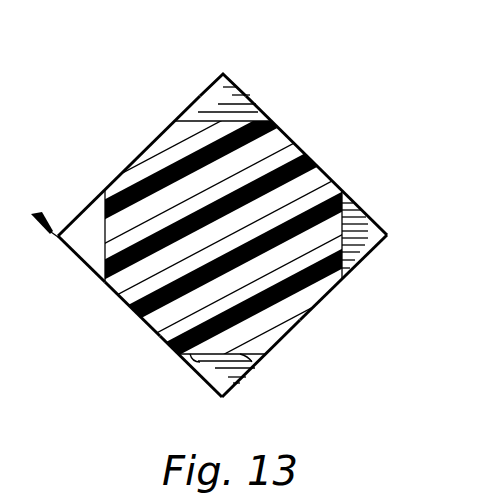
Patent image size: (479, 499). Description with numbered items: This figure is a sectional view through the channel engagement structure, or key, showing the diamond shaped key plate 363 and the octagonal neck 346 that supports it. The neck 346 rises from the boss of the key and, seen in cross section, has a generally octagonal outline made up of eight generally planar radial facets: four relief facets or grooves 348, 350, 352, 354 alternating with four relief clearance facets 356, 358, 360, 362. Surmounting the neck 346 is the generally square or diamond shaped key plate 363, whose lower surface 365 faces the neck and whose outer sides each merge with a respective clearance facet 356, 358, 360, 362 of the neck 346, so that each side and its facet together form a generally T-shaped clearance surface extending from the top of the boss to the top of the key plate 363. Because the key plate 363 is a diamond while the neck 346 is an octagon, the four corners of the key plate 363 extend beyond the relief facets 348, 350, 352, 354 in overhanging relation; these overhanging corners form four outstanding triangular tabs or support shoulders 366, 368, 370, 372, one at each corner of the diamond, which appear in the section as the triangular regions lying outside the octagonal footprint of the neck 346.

The neck 346 is at (195, 372).
The relief facet 348 is at (238, 120).
The relief facet 350 is at (103, 228).
The relief facet 352 is at (252, 369).
The relief facet 354 is at (362, 207).
The relief clearance facet 356 is at (142, 152).
The relief clearance facet 358 is at (150, 328).
The relief clearance facet 360 is at (309, 312).
The relief clearance facet 362 is at (321, 167).
The key plate 363 is at (35, 213).
The lower surface 365 is at (90, 267).
The support shoulder 366 is at (222, 72).
The support shoulder 368 is at (72, 238).
The support shoulder 370 is at (232, 380).
The support shoulder 372 is at (372, 232).